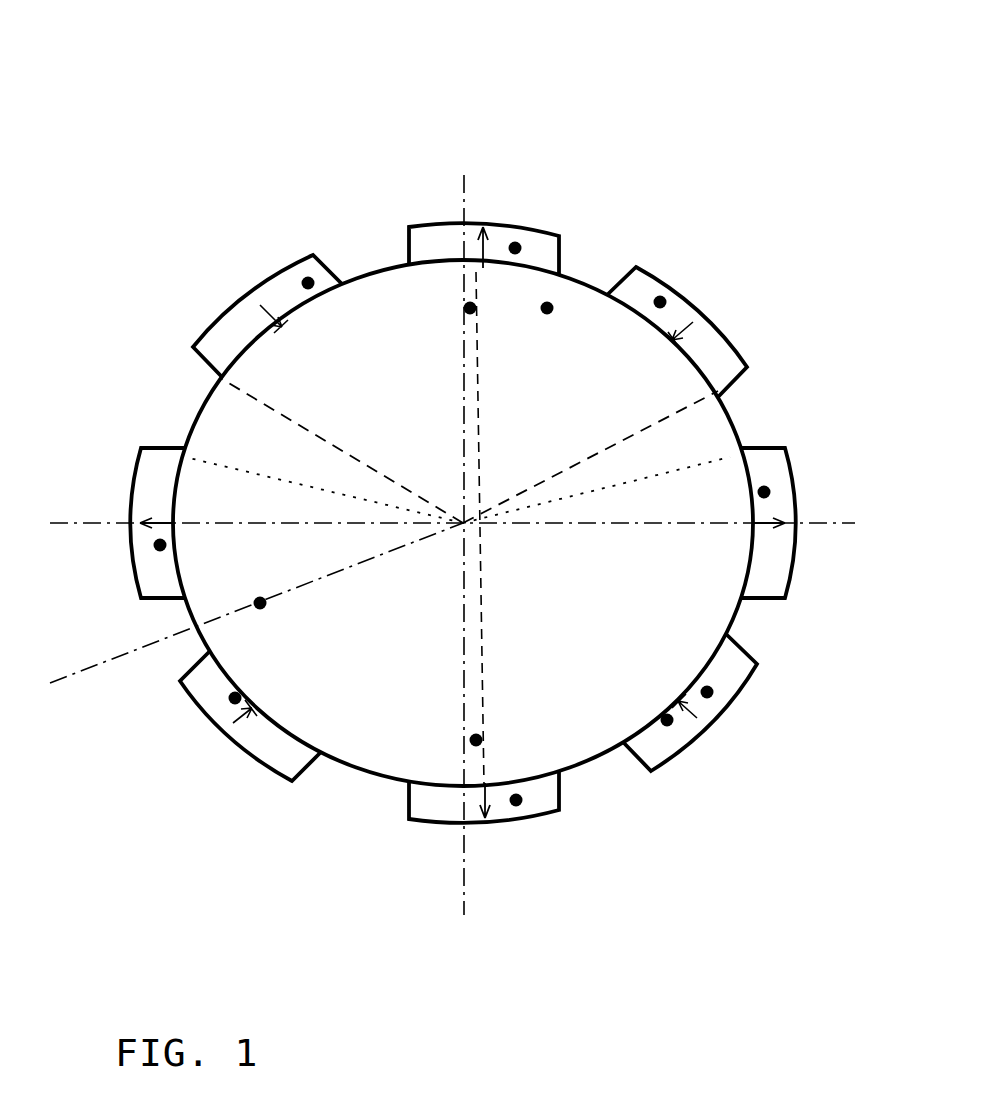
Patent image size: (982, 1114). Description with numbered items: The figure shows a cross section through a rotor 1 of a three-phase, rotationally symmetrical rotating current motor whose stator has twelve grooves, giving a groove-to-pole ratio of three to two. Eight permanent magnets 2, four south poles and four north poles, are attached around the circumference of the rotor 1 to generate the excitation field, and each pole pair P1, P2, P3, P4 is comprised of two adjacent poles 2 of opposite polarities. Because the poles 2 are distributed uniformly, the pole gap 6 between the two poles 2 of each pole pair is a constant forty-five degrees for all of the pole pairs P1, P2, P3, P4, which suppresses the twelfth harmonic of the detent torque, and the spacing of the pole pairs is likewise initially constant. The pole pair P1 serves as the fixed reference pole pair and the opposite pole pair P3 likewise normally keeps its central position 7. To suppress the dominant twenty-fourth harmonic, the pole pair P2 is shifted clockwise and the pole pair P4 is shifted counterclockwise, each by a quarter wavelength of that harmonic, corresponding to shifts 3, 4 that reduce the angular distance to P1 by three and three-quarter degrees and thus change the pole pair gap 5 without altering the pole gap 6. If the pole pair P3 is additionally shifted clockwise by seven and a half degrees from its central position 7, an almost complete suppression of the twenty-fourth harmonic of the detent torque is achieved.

The rotor 1 is at (547, 308).
The permanent magnet 2 is at (707, 692).
The pole pair shift 3 is at (470, 308).
The pole pair shift 4 is at (476, 740).
The pole pair gap 5 is at (324, 451).
The pole gap 6 is at (596, 457).
The central position 7 is at (260, 603).
The first pole pair P1 is at (660, 302).
The second pole pair P2 is at (515, 248).
The third pole pair P3 is at (160, 545).
The fourth pole pair P4 is at (516, 800).